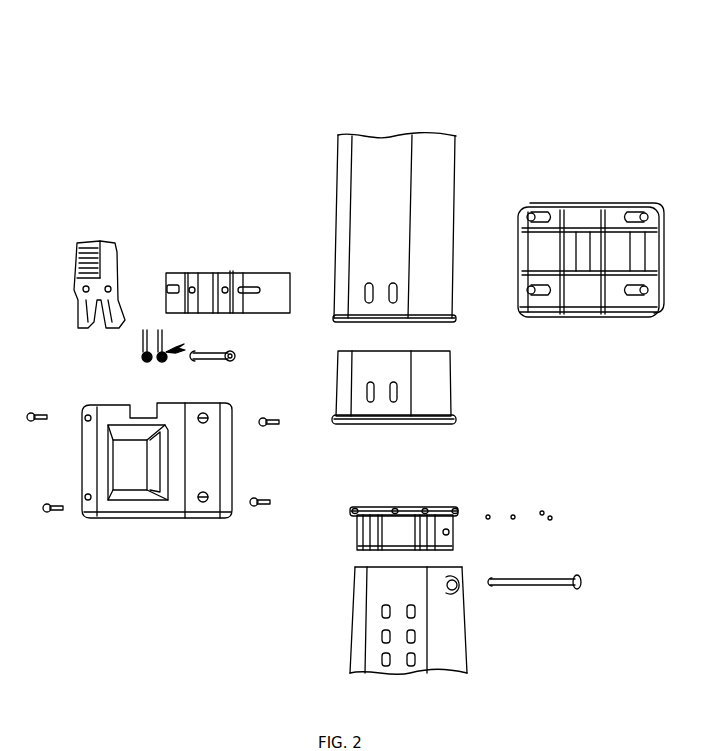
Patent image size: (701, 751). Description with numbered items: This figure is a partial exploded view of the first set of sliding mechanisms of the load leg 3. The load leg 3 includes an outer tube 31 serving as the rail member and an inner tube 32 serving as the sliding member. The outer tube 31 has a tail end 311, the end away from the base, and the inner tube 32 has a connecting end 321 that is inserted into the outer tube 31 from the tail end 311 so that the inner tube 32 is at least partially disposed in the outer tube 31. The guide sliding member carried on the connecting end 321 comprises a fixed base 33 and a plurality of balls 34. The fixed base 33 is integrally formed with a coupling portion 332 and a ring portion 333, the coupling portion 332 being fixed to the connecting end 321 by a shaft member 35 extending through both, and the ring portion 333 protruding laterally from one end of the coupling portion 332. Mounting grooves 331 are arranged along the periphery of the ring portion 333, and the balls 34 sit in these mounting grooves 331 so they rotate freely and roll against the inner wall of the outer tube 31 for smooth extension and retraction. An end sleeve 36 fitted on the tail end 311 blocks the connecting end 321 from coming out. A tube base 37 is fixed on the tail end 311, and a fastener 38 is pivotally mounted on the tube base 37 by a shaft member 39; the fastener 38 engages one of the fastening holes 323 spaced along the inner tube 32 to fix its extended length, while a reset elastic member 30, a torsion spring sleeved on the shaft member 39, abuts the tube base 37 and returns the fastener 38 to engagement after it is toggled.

The load leg 3 is at (508, 84).
The reset elastic member 30 is at (142, 356).
The outer tube 31 is at (358, 171).
The tail end 311 is at (337, 321).
The inner tube 32 is at (399, 620).
The connecting end 321 is at (377, 576).
The fastening holes 323 is at (385, 660).
The fixed base 33 is at (406, 502).
The mounting grooves 331 is at (457, 507).
The coupling portion 332 is at (445, 540).
The ring portion 333 is at (380, 507).
The balls 34 is at (545, 511).
The shaft member 35 is at (540, 586).
The end sleeve 36 is at (357, 373).
The tube base 37 is at (600, 318).
The fastener 38 is at (85, 240).
The shaft member 39 is at (213, 359).